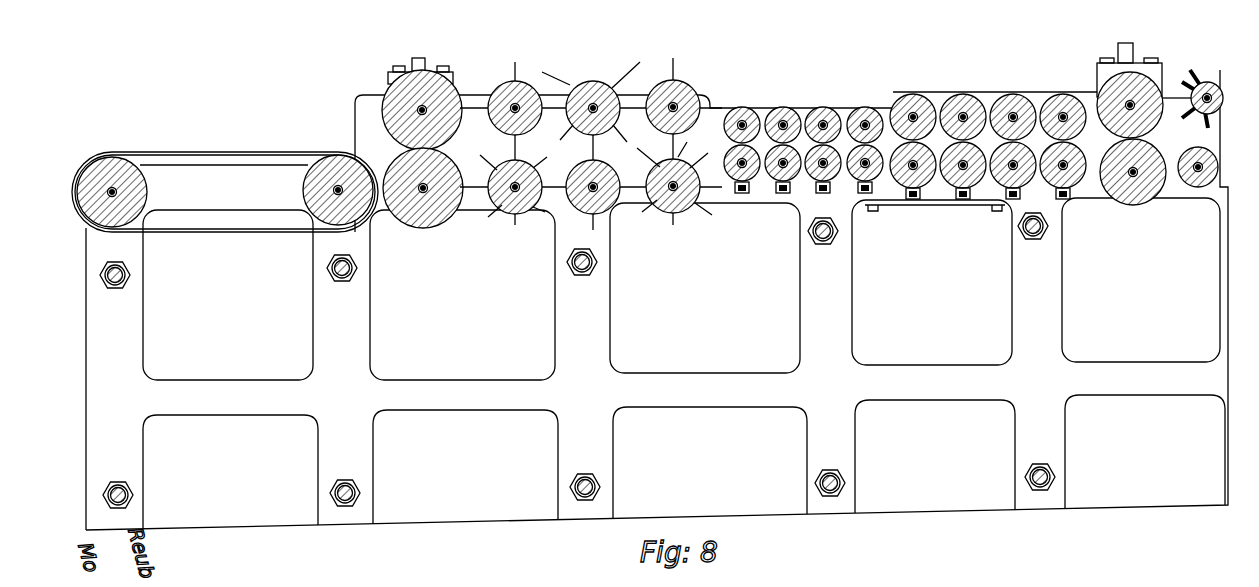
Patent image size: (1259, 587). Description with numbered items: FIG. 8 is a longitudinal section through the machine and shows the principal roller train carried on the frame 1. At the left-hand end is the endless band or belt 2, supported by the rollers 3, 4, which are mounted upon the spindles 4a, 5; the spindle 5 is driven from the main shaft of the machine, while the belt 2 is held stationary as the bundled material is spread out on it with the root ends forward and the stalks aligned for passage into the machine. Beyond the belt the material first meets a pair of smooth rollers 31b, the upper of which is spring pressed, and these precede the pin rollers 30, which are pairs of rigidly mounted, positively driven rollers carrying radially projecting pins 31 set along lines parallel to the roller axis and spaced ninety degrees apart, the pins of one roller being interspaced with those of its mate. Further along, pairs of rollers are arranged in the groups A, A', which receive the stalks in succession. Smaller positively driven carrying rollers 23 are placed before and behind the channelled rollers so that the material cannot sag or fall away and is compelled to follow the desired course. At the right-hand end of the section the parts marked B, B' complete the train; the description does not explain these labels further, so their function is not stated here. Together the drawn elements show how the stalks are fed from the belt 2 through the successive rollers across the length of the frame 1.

The frame 1 is at (92, 302).
The endless band or belt 2 is at (236, 153).
The roller 3 is at (118, 162).
The roller 4 is at (334, 156).
The spindle 4a is at (108, 193).
The spindle 5 is at (334, 190).
The carrying rollers 23 is at (1190, 186).
The pin rollers 30 is at (497, 85).
The pins 31 is at (515, 62).
The smooth rollers 31b is at (387, 95).
The roller group A is at (803, 135).
The roller group A' is at (988, 131).
The spiked wheel B is at (1202, 85).
The large roller pair B' is at (1117, 111).